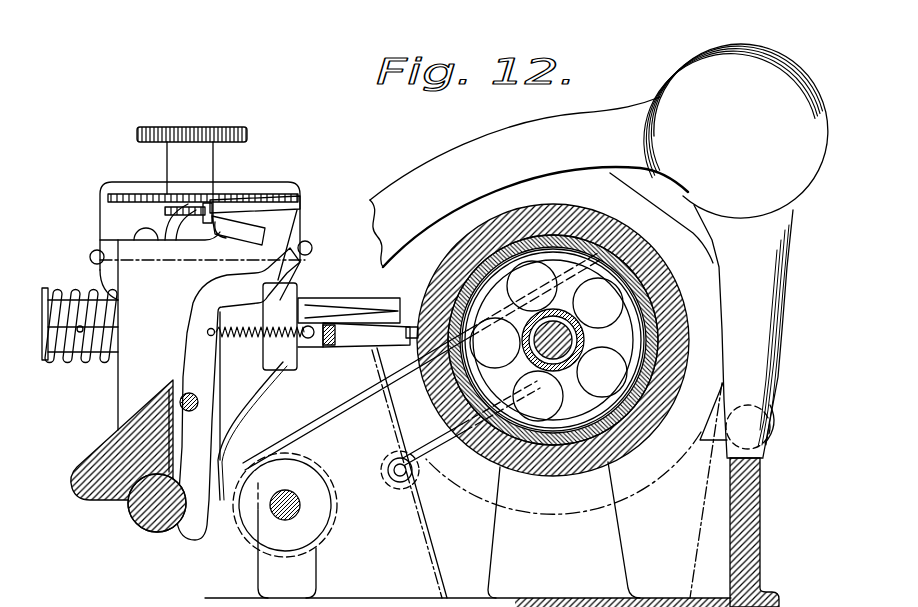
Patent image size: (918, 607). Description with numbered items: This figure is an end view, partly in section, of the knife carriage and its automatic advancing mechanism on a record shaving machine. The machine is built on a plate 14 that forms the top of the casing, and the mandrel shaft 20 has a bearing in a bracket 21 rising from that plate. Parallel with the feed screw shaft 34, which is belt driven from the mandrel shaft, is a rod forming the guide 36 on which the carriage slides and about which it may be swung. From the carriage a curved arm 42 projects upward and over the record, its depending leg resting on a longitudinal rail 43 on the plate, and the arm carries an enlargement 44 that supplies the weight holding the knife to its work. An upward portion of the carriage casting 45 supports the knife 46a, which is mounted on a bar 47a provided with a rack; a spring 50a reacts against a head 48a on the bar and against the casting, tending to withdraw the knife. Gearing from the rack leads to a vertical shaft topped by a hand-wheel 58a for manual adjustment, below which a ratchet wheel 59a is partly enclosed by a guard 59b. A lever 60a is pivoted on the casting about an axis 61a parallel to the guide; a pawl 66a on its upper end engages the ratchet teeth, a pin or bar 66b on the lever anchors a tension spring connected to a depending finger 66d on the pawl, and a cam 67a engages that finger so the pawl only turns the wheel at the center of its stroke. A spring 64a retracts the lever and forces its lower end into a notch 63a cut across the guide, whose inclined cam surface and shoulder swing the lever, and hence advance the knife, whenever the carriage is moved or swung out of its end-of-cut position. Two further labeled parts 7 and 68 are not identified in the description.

The base 7 is at (512, 600).
The plate 14 is at (646, 600).
The mandrel shaft 20 is at (558, 318).
The bracket 21 is at (497, 540).
The feed screw shaft 34 is at (287, 510).
The guide rod 36 is at (135, 530).
The curved arm 42 is at (461, 153).
The rail 43 is at (757, 541).
The enlargement 44 is at (736, 131).
The casting 45 is at (131, 335).
The knife 46a is at (410, 287).
The bar 47a is at (318, 302).
The head 48a is at (50, 272).
The spring 50a is at (90, 356).
The hand-wheel 58a is at (245, 133).
The ratchet wheel 59a is at (112, 200).
The guard 59b is at (112, 173).
The lever 60a is at (205, 348).
The pivot axis 61a is at (198, 399).
The notch 63a is at (170, 538).
The spring 64a is at (290, 340).
The pawl 66a is at (253, 202).
The pin or bar 66b is at (240, 226).
The depending finger 66d is at (212, 208).
The cam 67a is at (163, 247).
The brake ring 68 is at (553, 340).